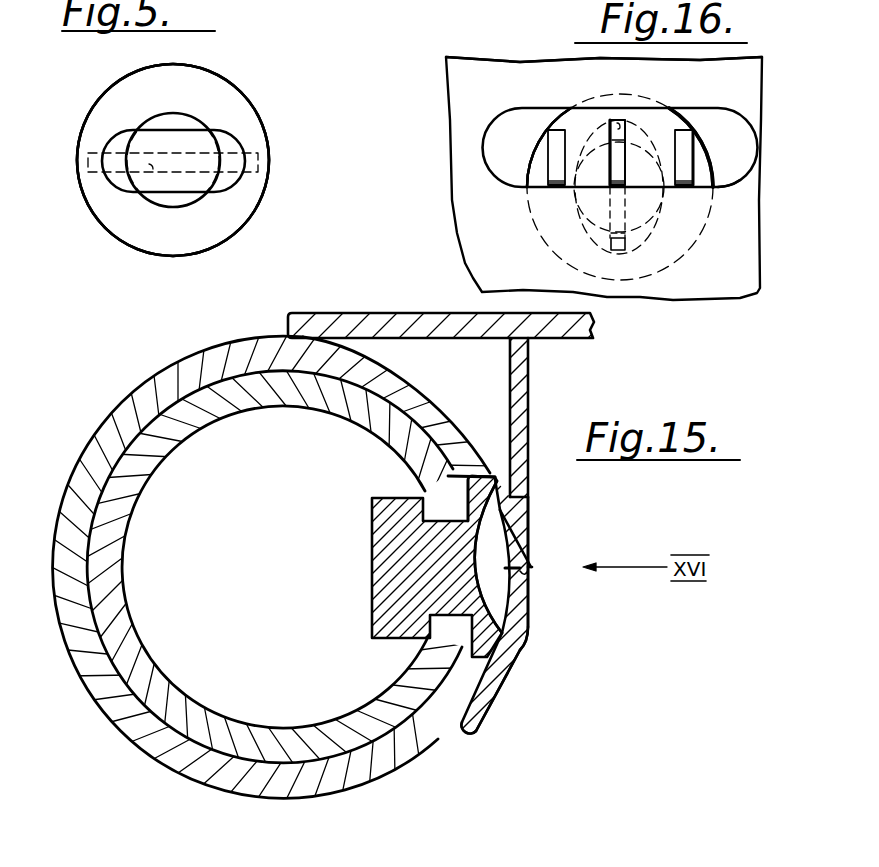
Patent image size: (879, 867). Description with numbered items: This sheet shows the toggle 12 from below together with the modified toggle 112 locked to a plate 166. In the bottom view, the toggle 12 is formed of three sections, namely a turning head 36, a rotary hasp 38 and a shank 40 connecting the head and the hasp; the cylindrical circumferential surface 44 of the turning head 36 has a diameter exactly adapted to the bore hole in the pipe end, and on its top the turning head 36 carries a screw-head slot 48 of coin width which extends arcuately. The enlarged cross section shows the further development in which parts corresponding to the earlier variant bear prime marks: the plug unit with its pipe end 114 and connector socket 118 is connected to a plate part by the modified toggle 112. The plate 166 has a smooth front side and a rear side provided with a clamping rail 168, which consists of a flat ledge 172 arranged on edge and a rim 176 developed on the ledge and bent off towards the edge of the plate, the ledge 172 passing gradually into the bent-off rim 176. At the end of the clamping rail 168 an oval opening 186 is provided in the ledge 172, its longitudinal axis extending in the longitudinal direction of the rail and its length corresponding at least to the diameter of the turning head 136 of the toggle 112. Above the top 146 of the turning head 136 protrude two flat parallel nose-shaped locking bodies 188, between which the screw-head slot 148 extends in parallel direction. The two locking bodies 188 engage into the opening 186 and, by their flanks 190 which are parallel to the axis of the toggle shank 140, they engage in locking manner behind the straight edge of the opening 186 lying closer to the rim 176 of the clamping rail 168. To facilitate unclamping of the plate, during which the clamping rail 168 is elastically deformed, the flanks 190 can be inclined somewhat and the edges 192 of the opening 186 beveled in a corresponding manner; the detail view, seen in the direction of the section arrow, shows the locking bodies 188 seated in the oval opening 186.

In FIG. 5, the toggle 12 is at (255, 99).
In FIG. 5, the turning head 36 is at (213, 233).
In FIG. 5, the rotary hasp 38 is at (188, 182).
In FIG. 5, the shank 40 is at (167, 200).
In FIG. 5, the cylindrical circumferential surface 44 is at (253, 213).
In FIG. 5, the screw-head slot 48 is at (152, 170).
In FIG. 16, the toggle 112 is at (526, 148).
In FIG. 15, the toggle 112 is at (367, 572).
In FIG. 15, the pipe end 114 is at (93, 669).
In FIG. 15, the connector socket 118 is at (125, 624).
In FIG. 16, the turning head 136 is at (538, 133).
In FIG. 15, the turning head 136 is at (517, 643).
In FIG. 16, the toggle shank 140 is at (578, 207).
In FIG. 15, the toggle shank 140 is at (453, 595).
In FIG. 16, the top 146 is at (578, 127).
In FIG. 15, the top 146 is at (497, 486).
In FIG. 16, the screw-head slot 148 is at (620, 127).
In FIG. 15, the screw-head slot 148 is at (483, 553).
In FIG. 15, the plate 166 is at (380, 311).
In FIG. 16, the clamping rail 168 is at (715, 301).
In FIG. 15, the clamping rail 168 is at (520, 658).
In FIG. 16, the ledge 172 is at (480, 78).
In FIG. 15, the ledge 172 is at (522, 390).
In FIG. 15, the rim 176 is at (480, 703).
In FIG. 16, the oval opening 186 is at (717, 128).
In FIG. 15, the oval opening 186 is at (520, 510).
In FIG. 16, the locking body 188 is at (553, 160).
In FIG. 15, the locking body 188 is at (515, 541).
In FIG. 16, the flank 190 is at (560, 188).
In FIG. 15, the flank 190 is at (520, 568).
In FIG. 16, the edge 192 is at (723, 180).
In FIG. 15, the edge 192 is at (524, 572).